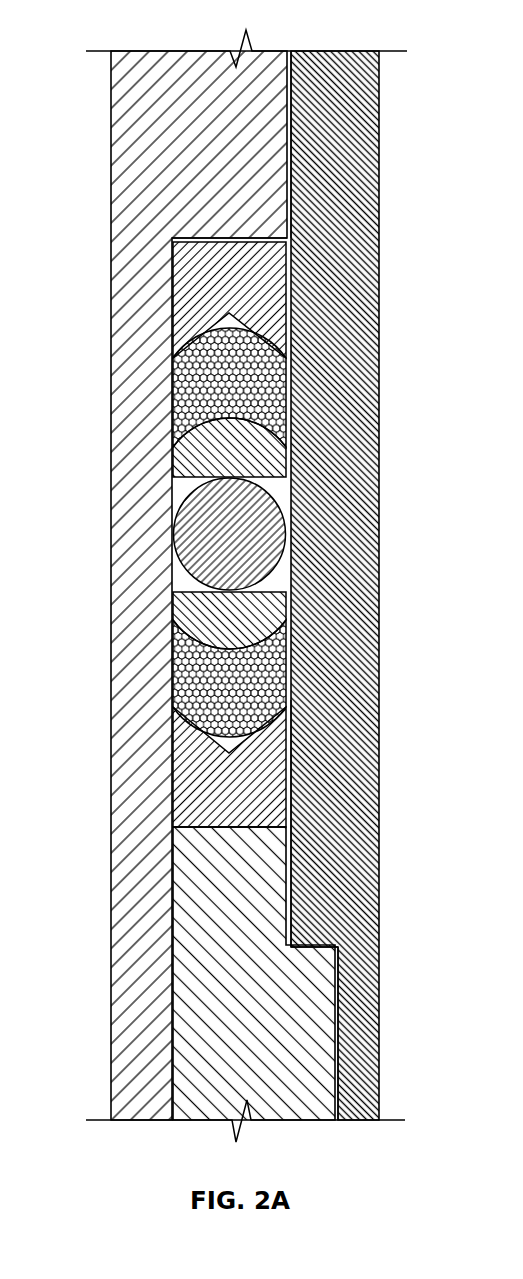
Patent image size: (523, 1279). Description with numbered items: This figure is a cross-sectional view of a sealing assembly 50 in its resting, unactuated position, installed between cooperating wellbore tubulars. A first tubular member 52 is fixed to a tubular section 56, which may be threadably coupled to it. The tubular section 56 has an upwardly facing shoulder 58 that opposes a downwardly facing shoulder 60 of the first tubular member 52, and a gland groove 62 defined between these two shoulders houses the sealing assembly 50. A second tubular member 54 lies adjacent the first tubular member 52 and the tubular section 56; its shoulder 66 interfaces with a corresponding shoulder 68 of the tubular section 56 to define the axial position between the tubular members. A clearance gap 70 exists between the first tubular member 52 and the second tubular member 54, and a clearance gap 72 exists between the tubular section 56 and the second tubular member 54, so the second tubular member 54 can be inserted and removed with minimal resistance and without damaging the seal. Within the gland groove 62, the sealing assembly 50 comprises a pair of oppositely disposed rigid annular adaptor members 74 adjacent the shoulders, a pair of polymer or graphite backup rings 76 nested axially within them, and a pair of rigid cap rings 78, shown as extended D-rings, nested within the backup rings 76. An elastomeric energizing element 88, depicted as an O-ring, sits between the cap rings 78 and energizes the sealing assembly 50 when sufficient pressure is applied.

The sealing assembly 50 is at (234, 527).
The first tubular member 52 is at (111, 138).
The second tubular member 54 is at (380, 185).
The tubular section 56 is at (182, 1035).
The upwardly facing shoulder 58 is at (176, 830).
The downwardly facing shoulder 60 is at (174, 245).
The gland groove 62 is at (300, 760).
The shoulder 66 is at (312, 946).
The shoulder 68 is at (338, 944).
The clearance gap 70 is at (291, 153).
The clearance gap 72 is at (291, 879).
The annular adaptor member 74 is at (174, 290).
The backup ring 76 is at (174, 408).
The cap ring 78 is at (174, 465).
The energizing element 88 is at (176, 524).